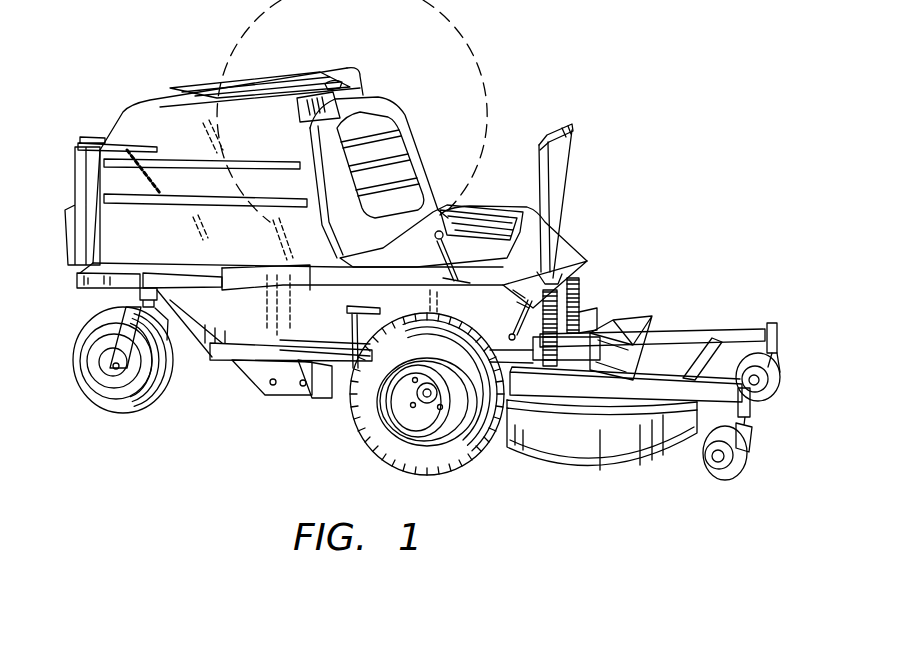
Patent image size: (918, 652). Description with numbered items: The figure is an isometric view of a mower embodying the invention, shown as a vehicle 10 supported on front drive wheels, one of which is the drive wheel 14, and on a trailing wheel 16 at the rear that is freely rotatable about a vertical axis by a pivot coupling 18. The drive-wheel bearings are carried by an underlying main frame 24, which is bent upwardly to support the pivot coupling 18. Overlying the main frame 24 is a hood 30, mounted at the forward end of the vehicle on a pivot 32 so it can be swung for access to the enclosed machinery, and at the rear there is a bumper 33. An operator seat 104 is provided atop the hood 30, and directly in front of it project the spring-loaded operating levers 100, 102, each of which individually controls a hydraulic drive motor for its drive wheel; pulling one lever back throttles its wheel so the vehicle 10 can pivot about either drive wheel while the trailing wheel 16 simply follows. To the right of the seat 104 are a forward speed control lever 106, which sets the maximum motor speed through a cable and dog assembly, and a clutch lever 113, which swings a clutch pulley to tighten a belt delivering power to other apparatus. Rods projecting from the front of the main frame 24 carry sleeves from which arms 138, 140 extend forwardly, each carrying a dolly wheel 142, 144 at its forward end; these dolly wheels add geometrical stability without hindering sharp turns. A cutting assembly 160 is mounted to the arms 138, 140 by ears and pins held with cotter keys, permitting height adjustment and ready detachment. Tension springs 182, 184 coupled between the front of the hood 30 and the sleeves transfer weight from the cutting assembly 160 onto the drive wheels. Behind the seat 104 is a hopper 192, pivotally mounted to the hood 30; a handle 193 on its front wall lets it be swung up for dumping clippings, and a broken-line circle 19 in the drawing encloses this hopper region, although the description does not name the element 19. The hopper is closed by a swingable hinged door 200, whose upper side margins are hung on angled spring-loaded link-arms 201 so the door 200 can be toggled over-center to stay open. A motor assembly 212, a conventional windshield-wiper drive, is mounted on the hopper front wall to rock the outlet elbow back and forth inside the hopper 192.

The vehicle 10 is at (364, 61).
The drive wheel 14 is at (355, 430).
The trailing wheel 16 is at (80, 352).
The pivot coupling 18 is at (140, 297).
The engine compartment region 19 is at (484, 88).
The main frame 24 is at (230, 355).
The hood 30 is at (252, 308).
The pivot 32 is at (511, 336).
The bumper 33 is at (77, 283).
The operating lever 100 is at (533, 153).
The operating lever 102 is at (572, 160).
The seat 104 is at (417, 135).
The forward speed control lever 106 is at (448, 213).
The clutch lever 113 is at (345, 307).
The arm 138 is at (738, 320).
The arm 140 is at (755, 408).
The dolly wheel 142 is at (785, 361).
The dolly wheel 144 is at (752, 455).
The cutting assembly 160 is at (636, 472).
The tension spring 182 is at (580, 290).
The tension spring 184 is at (592, 315).
The hopper 192 is at (223, 88).
The handle 193 is at (334, 82).
The hinged door 200 is at (72, 186).
The spring-loaded link-arm 201 is at (110, 138).
The motor assembly 212 is at (317, 80).